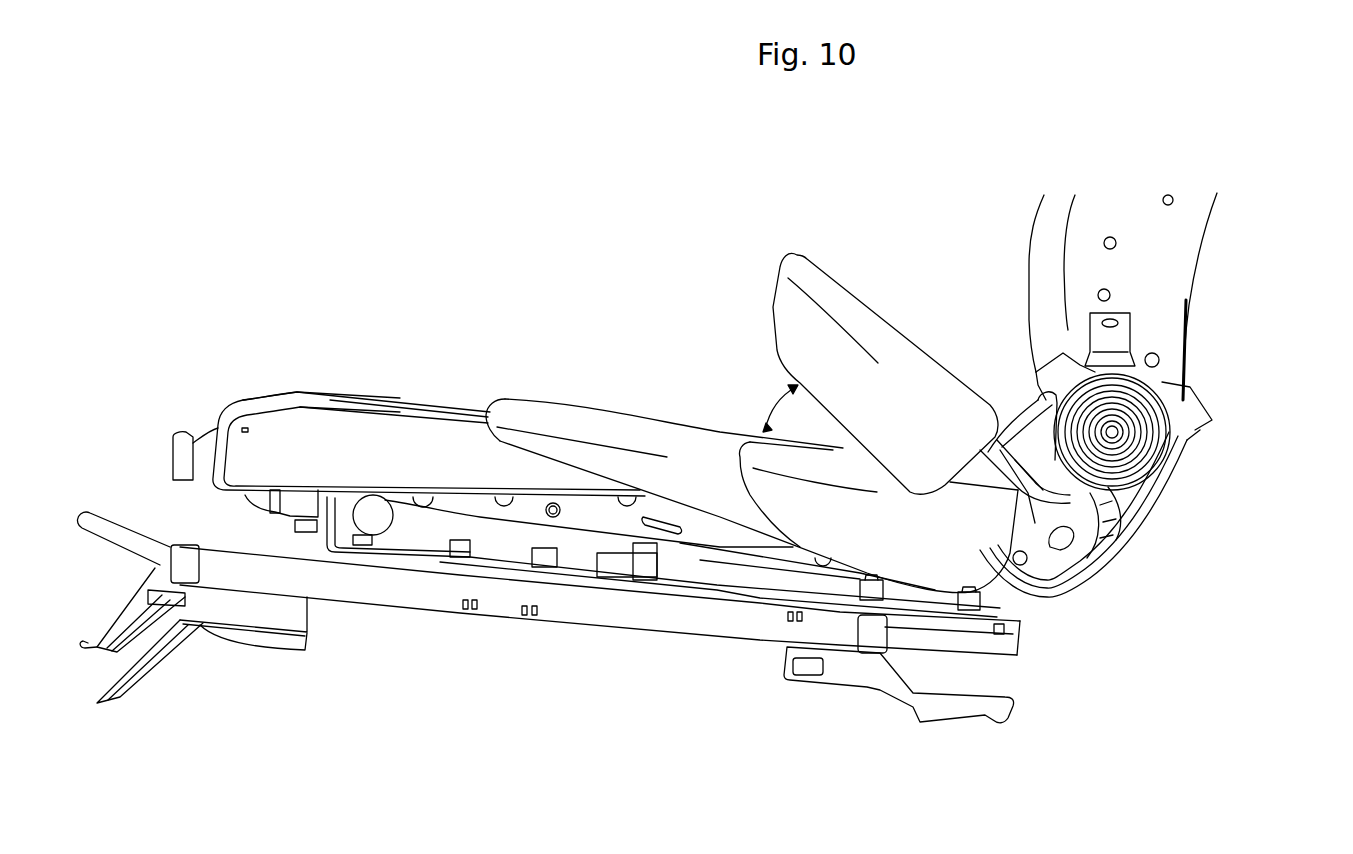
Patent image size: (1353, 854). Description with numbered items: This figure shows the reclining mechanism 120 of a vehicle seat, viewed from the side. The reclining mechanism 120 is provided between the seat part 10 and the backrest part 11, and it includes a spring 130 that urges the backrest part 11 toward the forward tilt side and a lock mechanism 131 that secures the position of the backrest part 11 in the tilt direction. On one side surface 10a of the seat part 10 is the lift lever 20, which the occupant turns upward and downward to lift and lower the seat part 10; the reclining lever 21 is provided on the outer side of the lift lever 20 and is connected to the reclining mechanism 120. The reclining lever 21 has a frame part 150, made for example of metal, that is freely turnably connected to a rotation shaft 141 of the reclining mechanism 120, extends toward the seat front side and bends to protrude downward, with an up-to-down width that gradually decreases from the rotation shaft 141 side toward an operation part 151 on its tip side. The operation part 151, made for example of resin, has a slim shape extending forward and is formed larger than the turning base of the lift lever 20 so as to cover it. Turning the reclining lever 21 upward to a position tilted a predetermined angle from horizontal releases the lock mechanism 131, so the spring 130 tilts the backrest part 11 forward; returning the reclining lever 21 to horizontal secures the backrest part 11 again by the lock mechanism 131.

The seat part 10 is at (405, 393).
The side surface 10a is at (285, 440).
The backrest part 11 is at (1205, 243).
The lift lever 20 is at (623, 415).
The reclining lever 21 is at (820, 527).
The reclining mechanism 120 is at (1188, 457).
The spring 130 is at (1177, 418).
The lock mechanism 131 is at (1153, 480).
The rotation shaft 141 is at (1137, 417).
The frame part 150 is at (1060, 600).
The operation part 151 is at (817, 523).